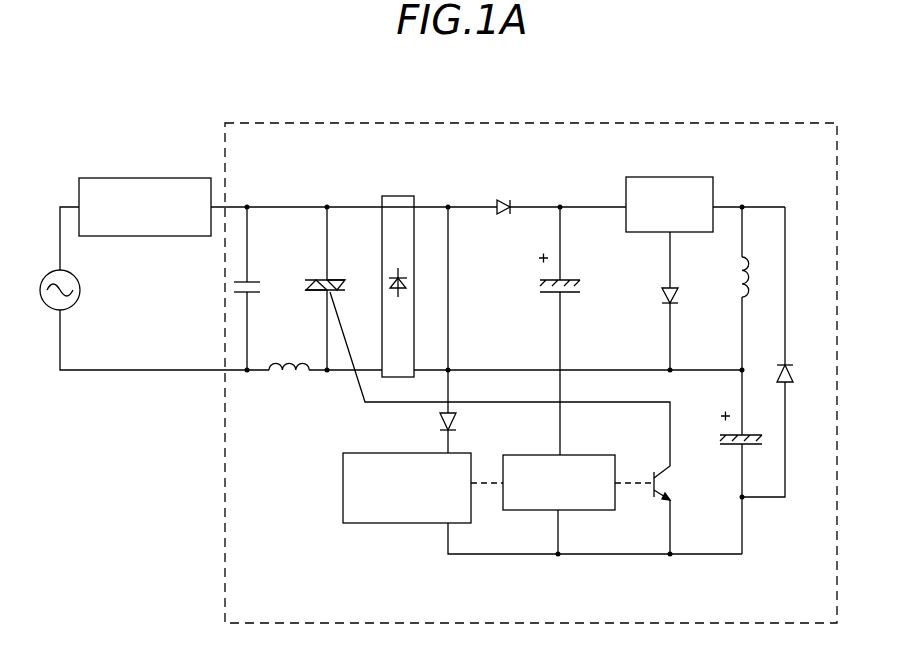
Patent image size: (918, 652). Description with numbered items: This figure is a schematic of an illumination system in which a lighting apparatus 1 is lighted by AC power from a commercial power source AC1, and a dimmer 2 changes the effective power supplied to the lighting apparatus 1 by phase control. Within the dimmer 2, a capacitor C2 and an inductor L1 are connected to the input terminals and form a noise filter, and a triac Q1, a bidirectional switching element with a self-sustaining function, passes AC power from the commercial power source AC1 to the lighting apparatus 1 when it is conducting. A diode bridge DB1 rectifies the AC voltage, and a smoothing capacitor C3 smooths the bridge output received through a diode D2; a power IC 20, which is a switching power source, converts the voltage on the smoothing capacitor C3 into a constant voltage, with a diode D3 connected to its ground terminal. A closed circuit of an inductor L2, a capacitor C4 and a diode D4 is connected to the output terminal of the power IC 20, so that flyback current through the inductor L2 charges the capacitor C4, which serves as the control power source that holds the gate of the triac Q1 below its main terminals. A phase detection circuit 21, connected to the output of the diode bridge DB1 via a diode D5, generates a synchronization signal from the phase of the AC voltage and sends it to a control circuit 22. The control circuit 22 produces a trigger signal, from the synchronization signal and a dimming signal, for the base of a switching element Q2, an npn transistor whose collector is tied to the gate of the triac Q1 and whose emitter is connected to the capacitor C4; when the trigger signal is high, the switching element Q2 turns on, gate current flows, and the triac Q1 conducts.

The lighting apparatus 1 is at (192, 178).
The dimmer 2 is at (222, 482).
The power IC 20 is at (680, 177).
The phase detection circuit 21 is at (343, 500).
The control circuit 22 is at (597, 455).
The commercial power source AC1 is at (48, 275).
The capacitor C2 is at (259, 288).
The inductor L1 is at (289, 380).
The triac Q1 is at (487, 342).
The diode bridge DB1 is at (400, 271).
The diode D2 is at (504, 190).
The smoothing capacitor C3 is at (544, 331).
The diode D3 is at (687, 301).
The inductor L2 is at (757, 288).
The diode D4 is at (784, 352).
The capacitor C4 is at (737, 462).
The diode D5 is at (433, 433).
The switching element Q2 is at (653, 513).